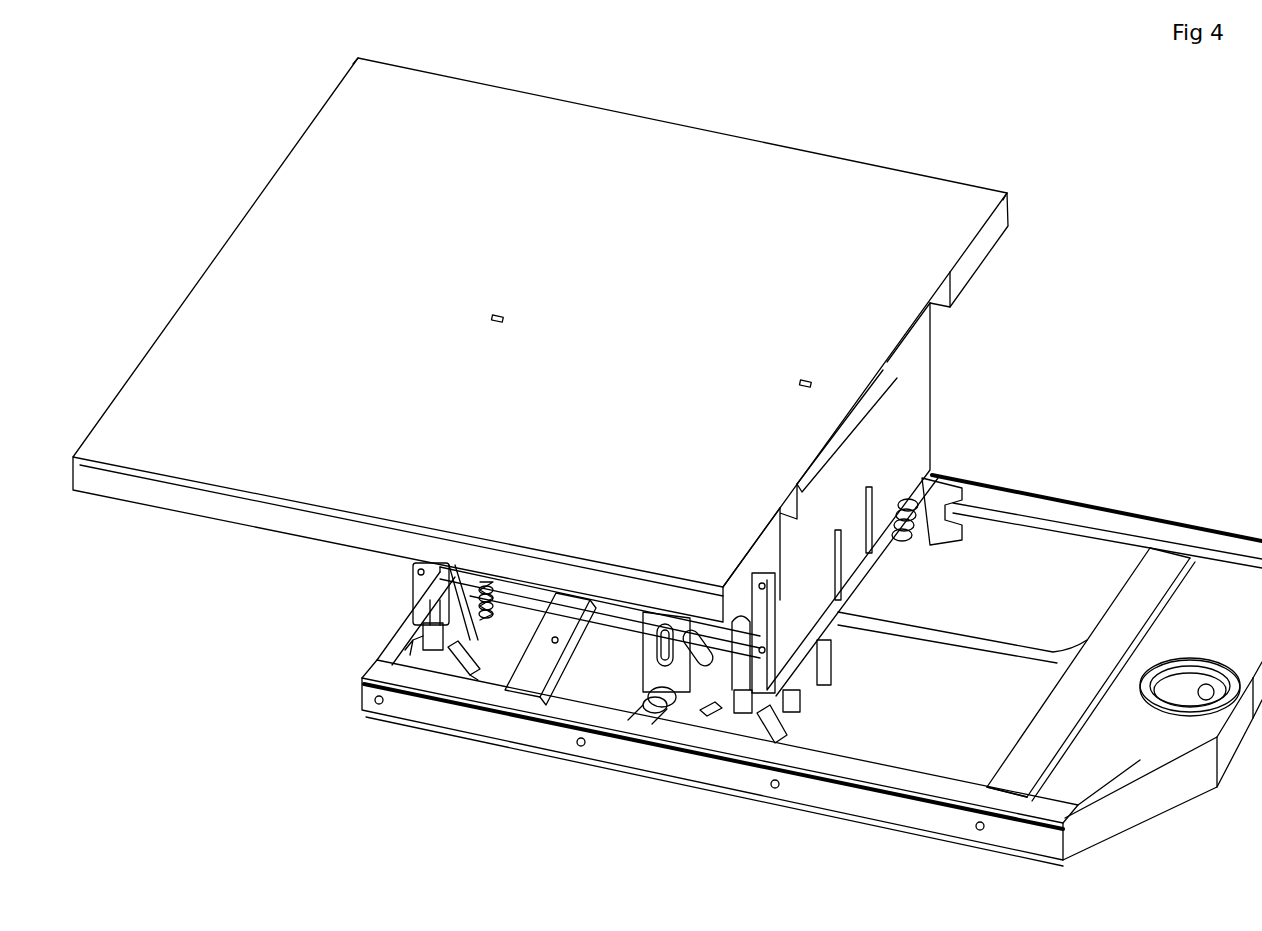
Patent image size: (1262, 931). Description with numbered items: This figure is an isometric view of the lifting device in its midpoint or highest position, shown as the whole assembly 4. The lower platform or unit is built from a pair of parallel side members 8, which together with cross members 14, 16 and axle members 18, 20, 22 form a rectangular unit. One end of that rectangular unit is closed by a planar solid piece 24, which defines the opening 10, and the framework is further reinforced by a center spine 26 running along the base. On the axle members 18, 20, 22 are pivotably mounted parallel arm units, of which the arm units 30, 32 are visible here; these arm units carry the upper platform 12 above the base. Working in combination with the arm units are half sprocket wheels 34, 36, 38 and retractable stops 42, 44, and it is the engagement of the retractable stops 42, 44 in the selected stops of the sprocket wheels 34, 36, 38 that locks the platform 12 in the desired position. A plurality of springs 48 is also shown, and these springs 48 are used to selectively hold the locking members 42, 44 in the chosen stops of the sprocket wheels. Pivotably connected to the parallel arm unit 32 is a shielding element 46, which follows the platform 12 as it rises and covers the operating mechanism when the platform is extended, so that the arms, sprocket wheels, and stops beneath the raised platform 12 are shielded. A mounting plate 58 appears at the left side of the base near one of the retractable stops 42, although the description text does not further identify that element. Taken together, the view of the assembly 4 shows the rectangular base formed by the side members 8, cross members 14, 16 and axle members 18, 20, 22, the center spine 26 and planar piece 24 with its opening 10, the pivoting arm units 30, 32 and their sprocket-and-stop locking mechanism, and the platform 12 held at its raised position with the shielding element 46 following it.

The frame assembly 4 is at (1007, 763).
The side members 8 is at (1060, 511).
The opening 10 is at (1187, 662).
The platform 12 is at (716, 313).
The cross member 14 is at (1120, 595).
The cross member 16 is at (560, 658).
The axle member 18 is at (517, 613).
The axle member 20 is at (737, 677).
The axle member 22 is at (812, 712).
The planar solid piece 24 is at (1144, 748).
The center spine 26 is at (935, 641).
The parallel arm unit 30 is at (657, 673).
The parallel arm unit 32 is at (720, 683).
The half sprocket wheel 34 is at (470, 660).
The half sprocket wheel 36 is at (780, 735).
The half sprocket wheel 38 is at (940, 478).
The retractable stop 42 is at (423, 632).
The retractable stop 44 is at (743, 703).
The shielding element 46 is at (920, 423).
The springs 48 is at (880, 552).
The mounting plate 58 is at (422, 592).